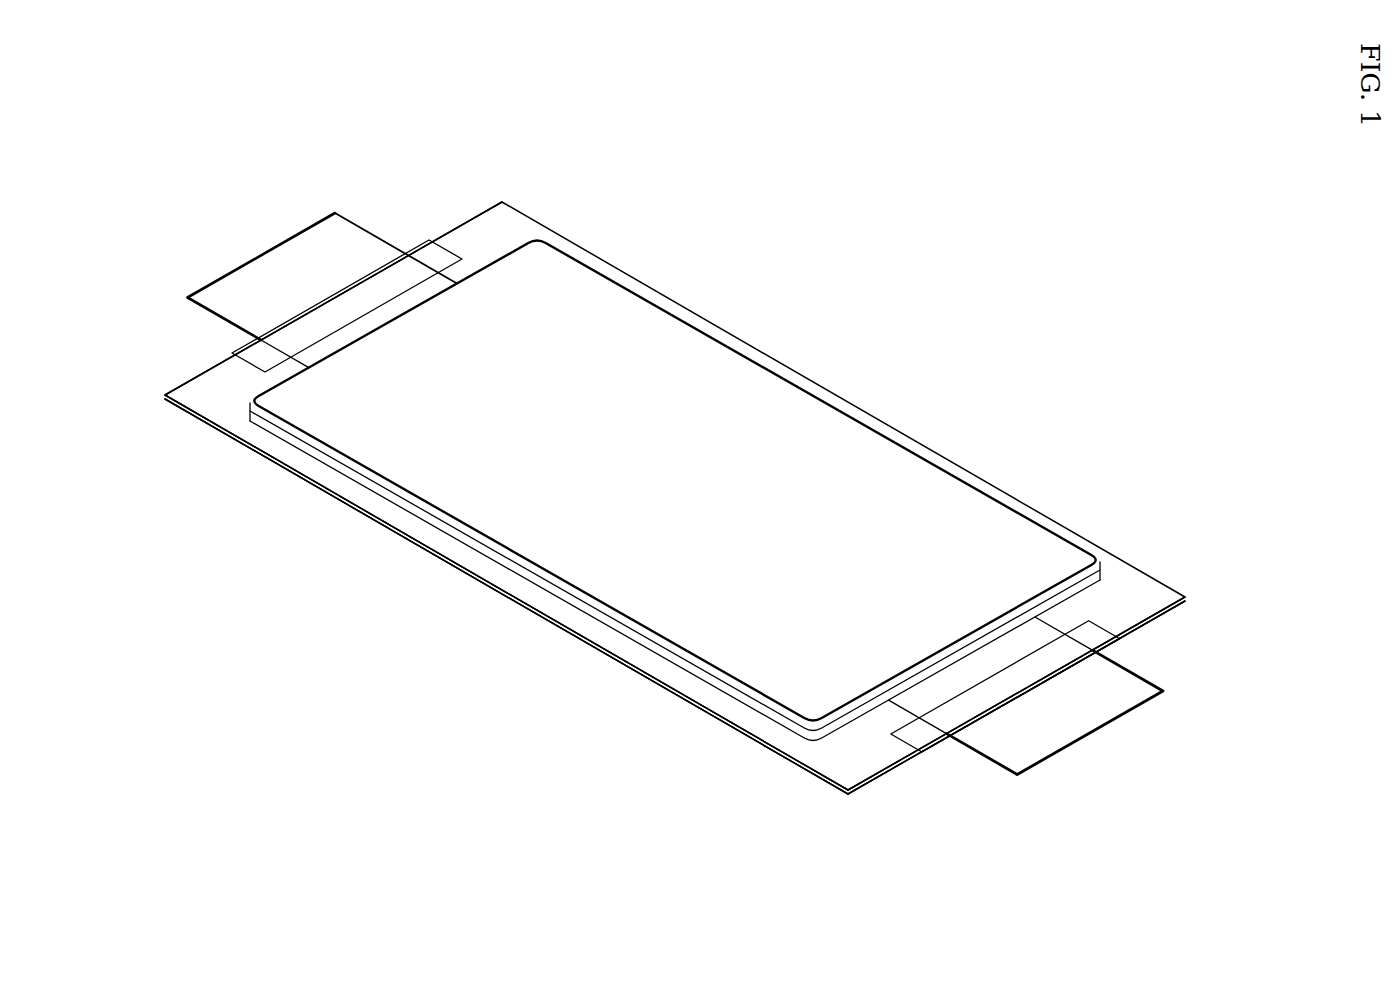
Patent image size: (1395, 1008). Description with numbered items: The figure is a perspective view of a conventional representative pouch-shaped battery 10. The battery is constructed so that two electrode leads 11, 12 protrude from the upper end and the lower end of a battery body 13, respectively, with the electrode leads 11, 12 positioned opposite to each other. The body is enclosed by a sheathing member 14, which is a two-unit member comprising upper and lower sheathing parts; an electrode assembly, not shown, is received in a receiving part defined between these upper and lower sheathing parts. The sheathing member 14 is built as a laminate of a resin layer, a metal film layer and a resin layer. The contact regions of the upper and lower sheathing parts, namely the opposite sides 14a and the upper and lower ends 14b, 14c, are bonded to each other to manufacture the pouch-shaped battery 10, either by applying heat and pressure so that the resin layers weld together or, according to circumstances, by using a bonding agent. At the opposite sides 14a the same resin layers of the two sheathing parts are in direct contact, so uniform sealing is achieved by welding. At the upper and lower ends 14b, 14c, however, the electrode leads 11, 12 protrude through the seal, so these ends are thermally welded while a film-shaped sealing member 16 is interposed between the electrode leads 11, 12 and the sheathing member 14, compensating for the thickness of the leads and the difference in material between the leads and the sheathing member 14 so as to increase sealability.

The pouch-shaped battery 10 is at (166, 76).
The electrode lead 11 is at (288, 262).
The electrode lead 12 is at (1093, 733).
The battery body 13 is at (805, 413).
The sheathing member 14 is at (1160, 575).
The opposite sides 14a is at (503, 223).
The upper end 14b is at (667, 677).
The lower end 14c is at (870, 753).
The film-shaped sealing member 16 is at (1117, 640).